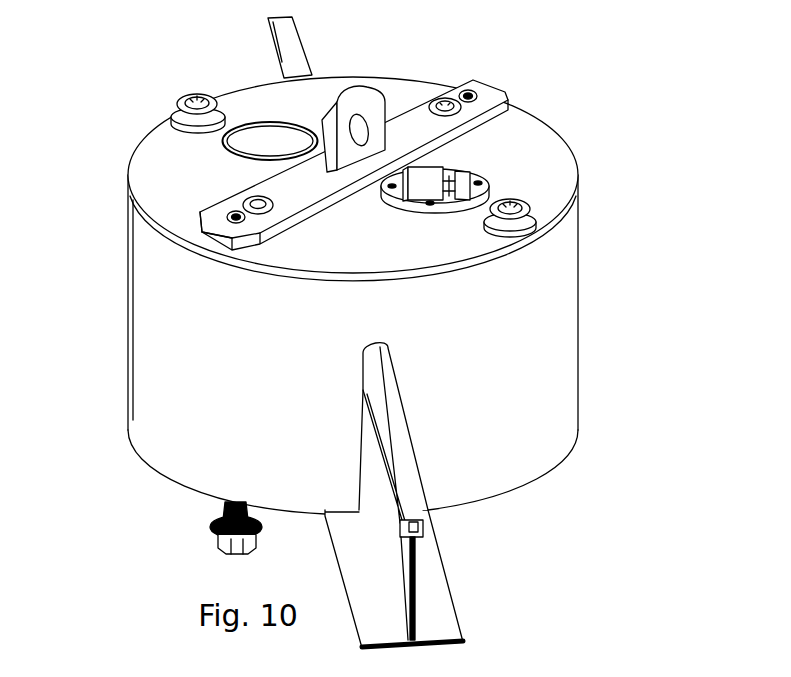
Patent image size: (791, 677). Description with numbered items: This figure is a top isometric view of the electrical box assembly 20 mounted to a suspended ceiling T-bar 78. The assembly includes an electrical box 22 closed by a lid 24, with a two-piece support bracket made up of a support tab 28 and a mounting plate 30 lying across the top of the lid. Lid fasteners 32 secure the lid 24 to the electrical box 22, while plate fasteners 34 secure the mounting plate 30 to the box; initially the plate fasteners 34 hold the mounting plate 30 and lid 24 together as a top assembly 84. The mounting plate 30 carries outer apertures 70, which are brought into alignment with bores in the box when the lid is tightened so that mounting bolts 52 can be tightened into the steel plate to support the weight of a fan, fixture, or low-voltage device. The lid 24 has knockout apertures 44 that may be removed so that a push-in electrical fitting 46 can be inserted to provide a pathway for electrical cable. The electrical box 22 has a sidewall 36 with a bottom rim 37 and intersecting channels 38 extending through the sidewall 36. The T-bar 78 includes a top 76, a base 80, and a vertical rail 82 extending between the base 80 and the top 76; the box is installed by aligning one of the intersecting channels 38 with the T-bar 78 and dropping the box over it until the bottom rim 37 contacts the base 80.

The electrical box assembly 20 is at (95, 117).
The electrical box 22 is at (580, 331).
The lid 24 is at (327, 270).
The support tab 28 is at (372, 96).
The mounting plate 30 is at (492, 92).
The lid fasteners 32 is at (530, 197).
The plate fasteners 34 is at (447, 98).
The sidewall 36 is at (231, 394).
The bottom rim 37 is at (147, 473).
The intersecting channels 38 is at (382, 350).
The knockout apertures 44 is at (266, 140).
The push-in electrical fitting 46 is at (468, 178).
The mounting bolts 52 is at (215, 540).
The outer apertures 70 is at (210, 213).
The top 76 is at (400, 480).
The suspended ceiling T-bar 78 is at (385, 430).
The base 80 is at (442, 625).
The vertical rail 82 is at (415, 578).
The top assembly 84 is at (572, 124).